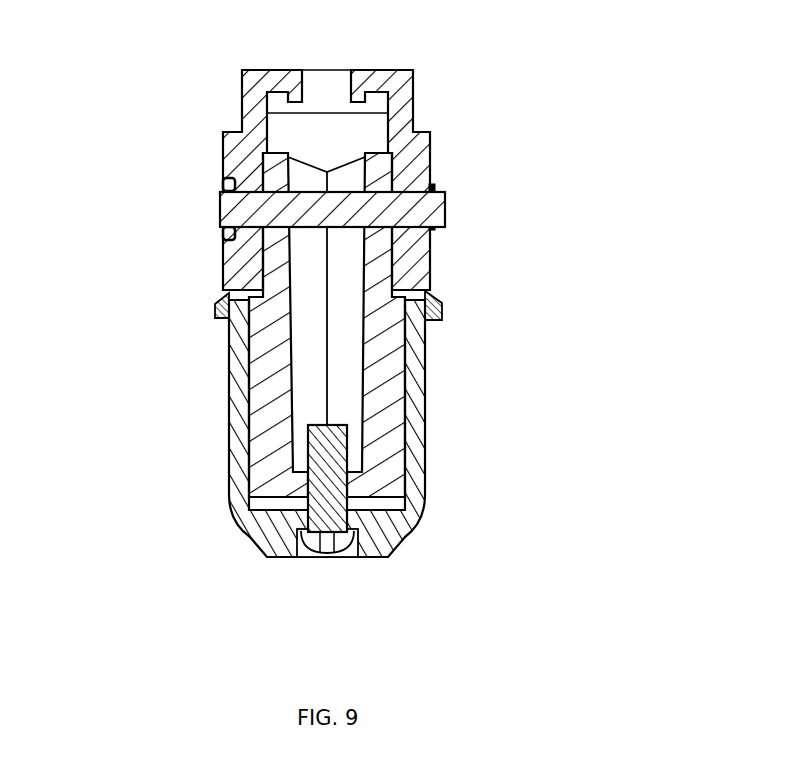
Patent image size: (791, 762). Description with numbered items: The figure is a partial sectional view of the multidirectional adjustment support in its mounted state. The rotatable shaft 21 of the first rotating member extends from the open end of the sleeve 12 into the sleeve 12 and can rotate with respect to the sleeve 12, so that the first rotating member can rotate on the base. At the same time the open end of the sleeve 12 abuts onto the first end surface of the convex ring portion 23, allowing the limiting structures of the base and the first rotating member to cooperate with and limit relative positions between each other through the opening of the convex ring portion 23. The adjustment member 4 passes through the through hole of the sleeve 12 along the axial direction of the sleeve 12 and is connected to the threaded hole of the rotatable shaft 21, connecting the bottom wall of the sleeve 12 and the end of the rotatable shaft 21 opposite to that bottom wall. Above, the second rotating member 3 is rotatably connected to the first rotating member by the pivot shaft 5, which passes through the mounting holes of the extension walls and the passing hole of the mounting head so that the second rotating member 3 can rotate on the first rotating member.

The second rotating member 3 is at (413, 167).
The pivot shaft 5 is at (240, 212).
The sleeve 12 is at (237, 447).
The rotatable shaft 21 is at (265, 328).
The convex ring portion 23 is at (443, 318).
The adjustment member 4 is at (357, 538).